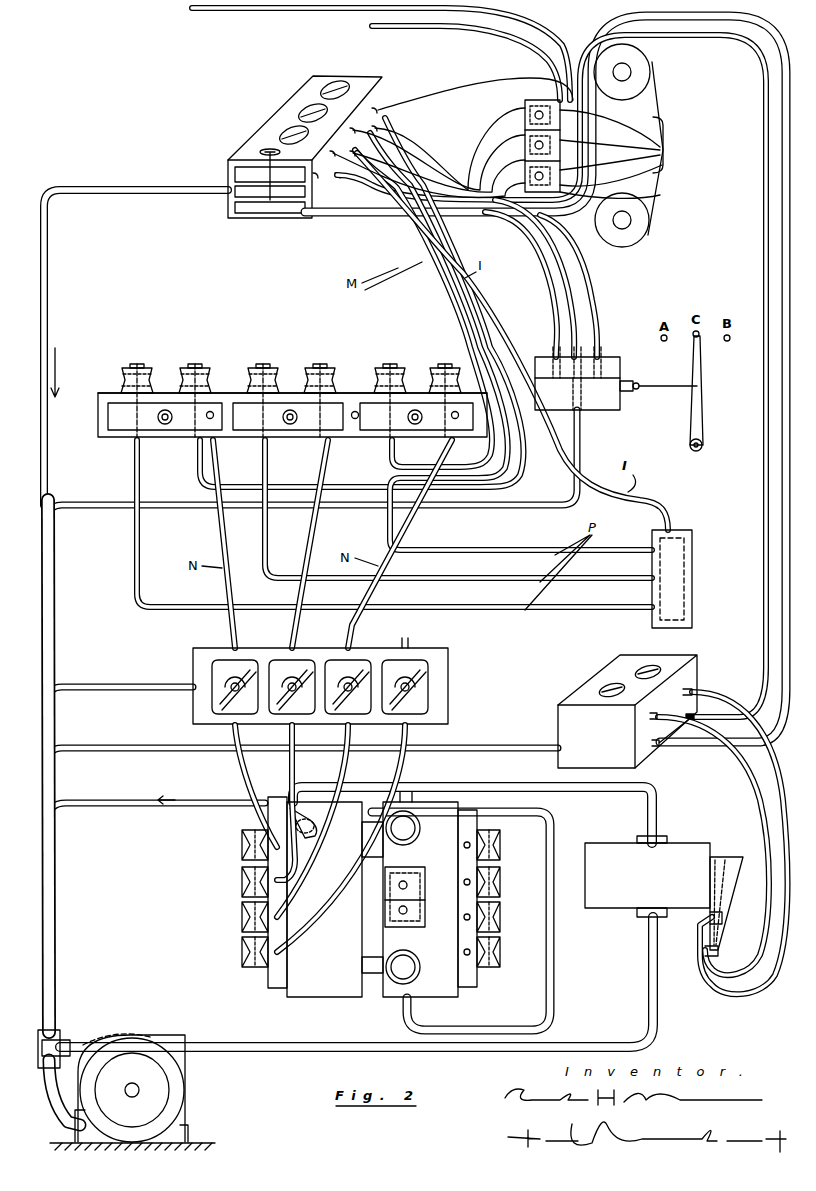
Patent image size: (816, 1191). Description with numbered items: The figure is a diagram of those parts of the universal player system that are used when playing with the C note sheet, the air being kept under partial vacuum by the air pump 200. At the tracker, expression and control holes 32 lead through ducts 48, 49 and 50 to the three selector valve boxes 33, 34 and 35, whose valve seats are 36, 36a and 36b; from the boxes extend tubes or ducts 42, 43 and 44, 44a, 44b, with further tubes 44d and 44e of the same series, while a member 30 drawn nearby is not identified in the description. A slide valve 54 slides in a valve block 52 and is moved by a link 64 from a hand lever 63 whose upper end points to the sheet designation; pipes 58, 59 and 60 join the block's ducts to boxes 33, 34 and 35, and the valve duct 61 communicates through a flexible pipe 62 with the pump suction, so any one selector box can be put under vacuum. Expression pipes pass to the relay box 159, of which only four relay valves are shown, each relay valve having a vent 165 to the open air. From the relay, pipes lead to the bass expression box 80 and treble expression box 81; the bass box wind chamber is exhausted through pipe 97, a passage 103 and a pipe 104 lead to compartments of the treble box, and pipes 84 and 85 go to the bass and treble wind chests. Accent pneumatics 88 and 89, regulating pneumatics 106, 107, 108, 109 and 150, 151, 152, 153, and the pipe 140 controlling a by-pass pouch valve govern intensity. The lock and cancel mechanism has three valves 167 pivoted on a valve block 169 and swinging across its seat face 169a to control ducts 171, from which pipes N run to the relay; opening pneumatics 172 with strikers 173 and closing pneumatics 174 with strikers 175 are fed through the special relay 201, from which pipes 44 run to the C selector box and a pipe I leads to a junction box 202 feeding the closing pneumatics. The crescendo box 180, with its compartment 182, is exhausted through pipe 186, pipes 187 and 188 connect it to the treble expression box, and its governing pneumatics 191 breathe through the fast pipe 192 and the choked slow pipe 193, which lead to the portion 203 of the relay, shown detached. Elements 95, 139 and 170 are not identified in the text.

The bracket plate 30 is at (665, 130).
The expression and control holes 32 is at (665, 147).
The selector valve box 33 is at (524, 107).
The selector valve box 34 is at (522, 170).
The selector valve box 35 is at (512, 140).
The valve seats 36 is at (520, 80).
The valve seats 36a is at (515, 160).
The valve seats 36b is at (500, 118).
The tubes or ducts 42 is at (460, 30).
The tubes or ducts 43 is at (530, 33).
The ducts or tubes 44 is at (606, 179).
The duct or tube 44a is at (625, 182).
The duct or tube 44b is at (655, 200).
The duct or tube 44d is at (763, 600).
The duct or tube 44e is at (782, 488).
The ducts or passages 48 is at (617, 130).
The ducts 49 is at (578, 218).
The ducts 50 is at (610, 150).
The valve block 52 is at (548, 360).
The slide valve 54 is at (612, 377).
The pipe 58 is at (569, 313).
The pipe 59 is at (600, 332).
The pipe 60 is at (565, 300).
The duct 61 is at (618, 396).
The flexible pipe 62 is at (580, 442).
The hand lever 63 is at (700, 405).
The link 64 is at (660, 384).
The bass expression box 80 is at (330, 985).
The treble expression box 81 is at (450, 988).
The pipe 84 is at (416, 826).
The pipe 85 is at (416, 968).
The accent pneumatic 88 is at (410, 912).
The accent pneumatic 89 is at (406, 914).
The pipe 95 is at (497, 746).
The pipe 97 is at (270, 800).
The passage 103 is at (364, 832).
The pipe 104 is at (362, 968).
The regulating pneumatic 106 is at (242, 847).
The regulating pneumatic 107 is at (242, 882).
The regulating pneumatic 108 is at (242, 916).
The regulating pneumatic 109 is at (242, 952).
The wire 139 is at (303, 938).
The pipe 140 is at (302, 897).
The regulating pneumatic 150 is at (504, 844).
The regulating pneumatic 151 is at (504, 882).
The regulating pneumatic 152 is at (504, 917).
The regulating pneumatic 153 is at (477, 944).
The relay box 159 is at (193, 668).
The vent 165 is at (226, 680).
The lock and cancel valve 167 is at (120, 435).
The valve block 169 is at (98, 426).
The valve seat face 169a is at (105, 400).
The indicator 170 is at (165, 425).
The duct 171 is at (213, 410).
The opening pneumatic 172 is at (208, 366).
The striker 173 is at (322, 372).
The closing pneumatic 174 is at (150, 366).
The striker 175 is at (270, 372).
The crescendo box 180 is at (647, 875).
The compartment 182 is at (492, 783).
The pipe 186 is at (637, 915).
The pipe 187 is at (636, 840).
The pipe 188 is at (553, 947).
The governing pneumatic 191 is at (730, 895).
The pipe 192 is at (755, 738).
The pipe 193 is at (748, 768).
The air pump 200 is at (170, 1095).
The relay 201 is at (248, 134).
The junction box 202 is at (693, 572).
The relay portion 203 is at (558, 720).